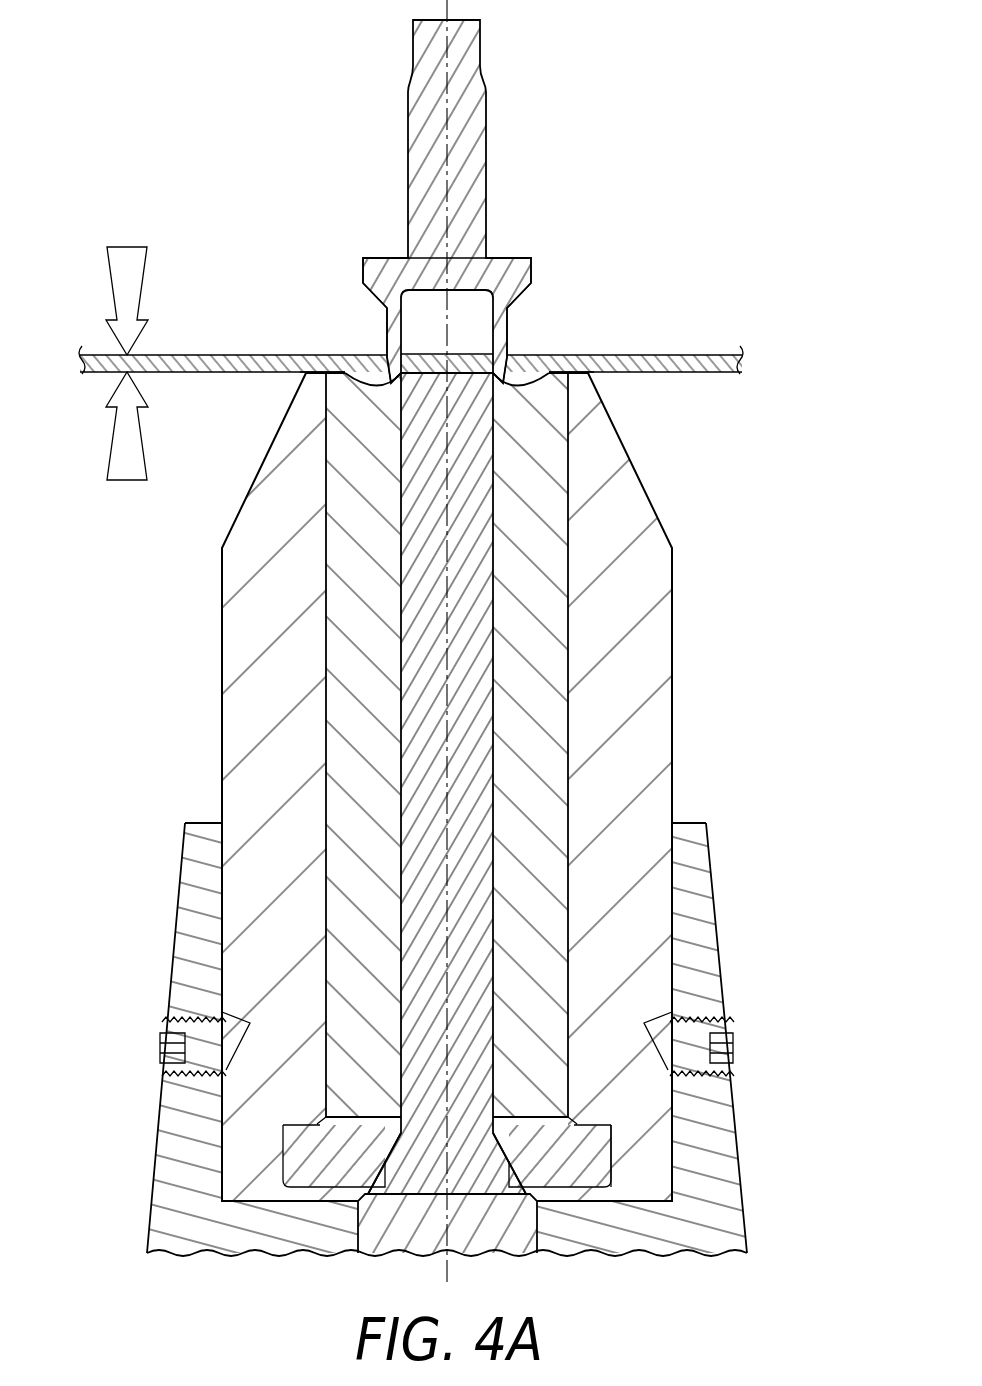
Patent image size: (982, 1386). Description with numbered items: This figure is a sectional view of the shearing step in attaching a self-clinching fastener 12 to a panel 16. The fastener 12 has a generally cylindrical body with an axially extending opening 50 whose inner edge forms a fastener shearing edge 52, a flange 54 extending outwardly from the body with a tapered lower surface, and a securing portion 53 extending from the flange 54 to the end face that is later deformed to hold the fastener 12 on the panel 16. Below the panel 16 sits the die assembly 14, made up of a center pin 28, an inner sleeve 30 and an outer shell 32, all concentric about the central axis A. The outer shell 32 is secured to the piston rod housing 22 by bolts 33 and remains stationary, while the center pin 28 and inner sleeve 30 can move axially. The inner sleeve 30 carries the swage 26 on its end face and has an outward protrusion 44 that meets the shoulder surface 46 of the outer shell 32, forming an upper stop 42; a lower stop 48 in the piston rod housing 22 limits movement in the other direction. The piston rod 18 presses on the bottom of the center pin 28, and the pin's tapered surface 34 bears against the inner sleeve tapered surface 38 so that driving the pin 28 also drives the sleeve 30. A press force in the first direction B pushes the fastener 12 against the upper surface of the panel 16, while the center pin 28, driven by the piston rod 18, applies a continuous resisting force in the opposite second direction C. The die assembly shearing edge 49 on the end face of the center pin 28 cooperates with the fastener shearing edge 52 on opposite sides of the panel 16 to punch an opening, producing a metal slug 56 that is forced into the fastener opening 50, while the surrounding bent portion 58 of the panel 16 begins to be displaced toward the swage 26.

The fastener 12 is at (524, 156).
The die assembly 14 is at (697, 571).
The panel 16 is at (712, 352).
The piston rod 18 is at (540, 1229).
The piston rod housing 22 is at (722, 931).
The swage 26 is at (318, 377).
The center pin 28 is at (497, 729).
The inner sleeve 30 is at (570, 740).
The outer shell 32 is at (675, 650).
The bolts 33 is at (160, 1051).
The tapered surface 34 is at (396, 1142).
The inner sleeve tapered surface 38 is at (398, 1172).
The upper stop 42 is at (588, 1125).
The protrusion 44 is at (305, 1137).
The shoulder surface 46 is at (613, 1120).
The lower stop 48 is at (318, 1203).
The die assembly shearing edge 49 is at (408, 378).
The fastener opening 50 is at (497, 322).
The fastener shearing edge 52 is at (494, 378).
The securing portion 53 is at (380, 300).
The flange 54 is at (372, 258).
The metal slug 56 is at (420, 352).
The bent portion 58 is at (370, 388).
The central axis A is at (447, 37).
The first direction B is at (107, 282).
The second direction C is at (107, 452).